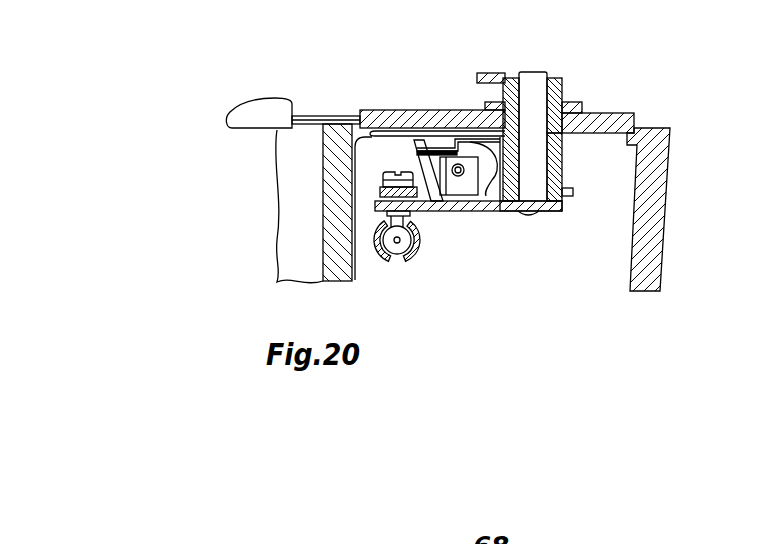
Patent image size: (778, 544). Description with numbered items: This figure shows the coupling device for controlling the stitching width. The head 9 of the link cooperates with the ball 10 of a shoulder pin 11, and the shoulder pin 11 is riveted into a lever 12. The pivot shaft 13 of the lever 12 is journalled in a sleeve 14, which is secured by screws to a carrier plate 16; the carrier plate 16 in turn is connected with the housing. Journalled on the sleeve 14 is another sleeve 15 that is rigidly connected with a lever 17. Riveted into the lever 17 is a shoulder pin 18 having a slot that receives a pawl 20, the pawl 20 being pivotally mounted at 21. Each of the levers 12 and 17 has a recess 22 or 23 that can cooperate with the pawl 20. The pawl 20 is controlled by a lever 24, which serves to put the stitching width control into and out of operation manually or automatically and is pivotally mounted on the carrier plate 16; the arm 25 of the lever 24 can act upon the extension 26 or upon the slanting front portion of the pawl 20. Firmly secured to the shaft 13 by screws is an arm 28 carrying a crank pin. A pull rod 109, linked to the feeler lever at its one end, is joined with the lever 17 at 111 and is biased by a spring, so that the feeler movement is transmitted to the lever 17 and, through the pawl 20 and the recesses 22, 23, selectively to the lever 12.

The head of link 9 is at (417, 260).
The ball 10 is at (397, 254).
The shoulder pin 11 is at (377, 253).
The lever 12 is at (507, 213).
The pivot shaft 13 is at (533, 82).
The sleeve 14 is at (575, 103).
The sleeve 15 is at (562, 160).
The carrier plate 16 is at (635, 117).
The lever 17 is at (572, 195).
The shoulder pin 18 is at (477, 167).
The pawl 20 is at (417, 167).
The pivot of pawl 21 is at (460, 177).
The recess 22 is at (430, 212).
The recess 23 is at (438, 182).
The lever 24 is at (317, 116).
The arm 25 is at (432, 145).
The extension 26 is at (492, 183).
The arm 28 is at (487, 73).
The pull rod 109 is at (377, 188).
The joint of pull rod and lever 111 is at (380, 178).